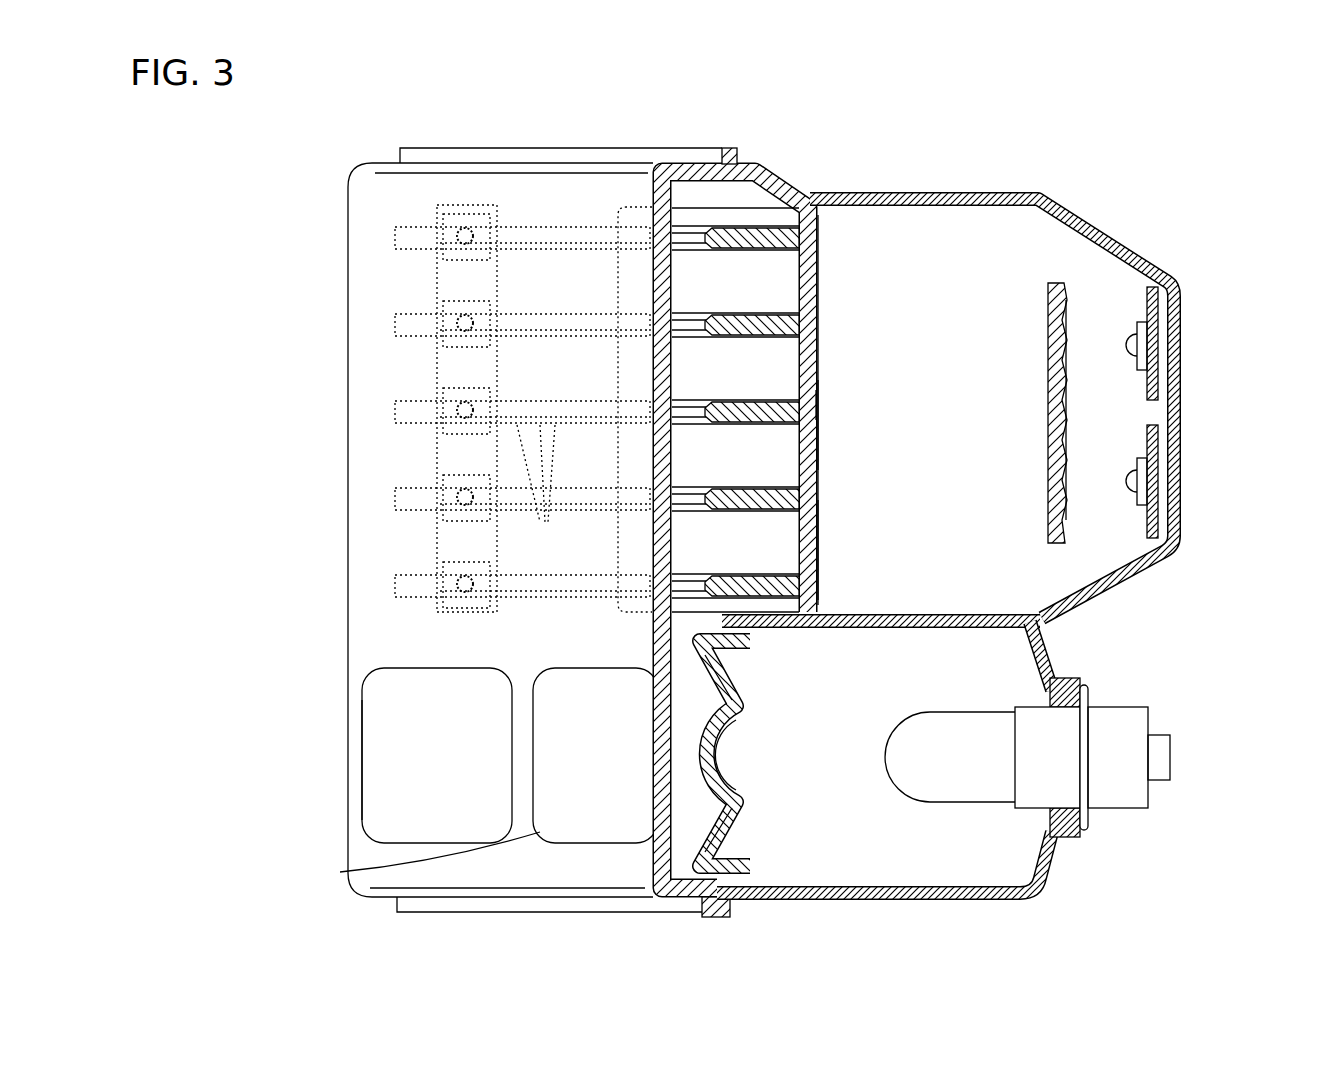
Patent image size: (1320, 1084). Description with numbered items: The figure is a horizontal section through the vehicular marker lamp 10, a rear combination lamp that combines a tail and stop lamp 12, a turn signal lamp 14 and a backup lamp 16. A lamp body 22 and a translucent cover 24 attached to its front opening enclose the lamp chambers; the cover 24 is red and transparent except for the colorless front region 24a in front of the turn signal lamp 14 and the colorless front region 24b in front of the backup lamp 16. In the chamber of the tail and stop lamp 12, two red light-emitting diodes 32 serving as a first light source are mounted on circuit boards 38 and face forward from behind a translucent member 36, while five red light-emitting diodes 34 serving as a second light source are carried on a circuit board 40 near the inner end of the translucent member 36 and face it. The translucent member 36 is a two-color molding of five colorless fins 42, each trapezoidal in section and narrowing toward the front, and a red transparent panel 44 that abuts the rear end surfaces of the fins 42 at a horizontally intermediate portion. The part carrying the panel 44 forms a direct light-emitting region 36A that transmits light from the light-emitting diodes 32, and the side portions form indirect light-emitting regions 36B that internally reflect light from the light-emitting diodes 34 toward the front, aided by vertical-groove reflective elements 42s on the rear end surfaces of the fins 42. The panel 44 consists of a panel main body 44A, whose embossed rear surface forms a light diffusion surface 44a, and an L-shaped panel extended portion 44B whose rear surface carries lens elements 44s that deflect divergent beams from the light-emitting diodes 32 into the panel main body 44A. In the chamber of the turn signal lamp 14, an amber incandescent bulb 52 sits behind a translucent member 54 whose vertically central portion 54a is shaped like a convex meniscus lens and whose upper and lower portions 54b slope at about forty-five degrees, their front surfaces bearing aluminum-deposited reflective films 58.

The vehicular marker lamp 10 is at (268, 268).
The tail and stop lamp 12 is at (385, 215).
The turn signal lamp 14 is at (523, 665).
The backup lamp 16 is at (360, 668).
The lamp body 22 is at (1009, 534).
The translucent cover 24 is at (345, 362).
The front region of the lamp chamber for the turn signal lamp 24a is at (340, 872).
The front region of the lamp chamber for the backup lamp 24b is at (360, 788).
The light-emitting diodes 32 is at (1127, 337).
The light-emitting diodes 34 is at (480, 307).
The translucent member 36 is at (858, 287).
The direct light-emitting region 36A is at (830, 405).
The indirect light-emitting regions 36B is at (380, 410).
The circuit boards 38 is at (1153, 353).
The circuit board 40 is at (433, 455).
The fins 42 is at (748, 305).
The reflective elements 42s is at (552, 494).
The panel 44 is at (820, 357).
The panel main body 44A is at (808, 447).
The panel extended portion 44B is at (1050, 468).
The light diffusion surface 44a is at (818, 527).
The lens elements 44s is at (1065, 497).
The incandescent bulb 52 is at (952, 710).
The translucent member 54 is at (708, 756).
The vertically central portion 54a is at (727, 757).
The upper and lower portions 54b is at (722, 690).
The reflective films 58 is at (718, 688).